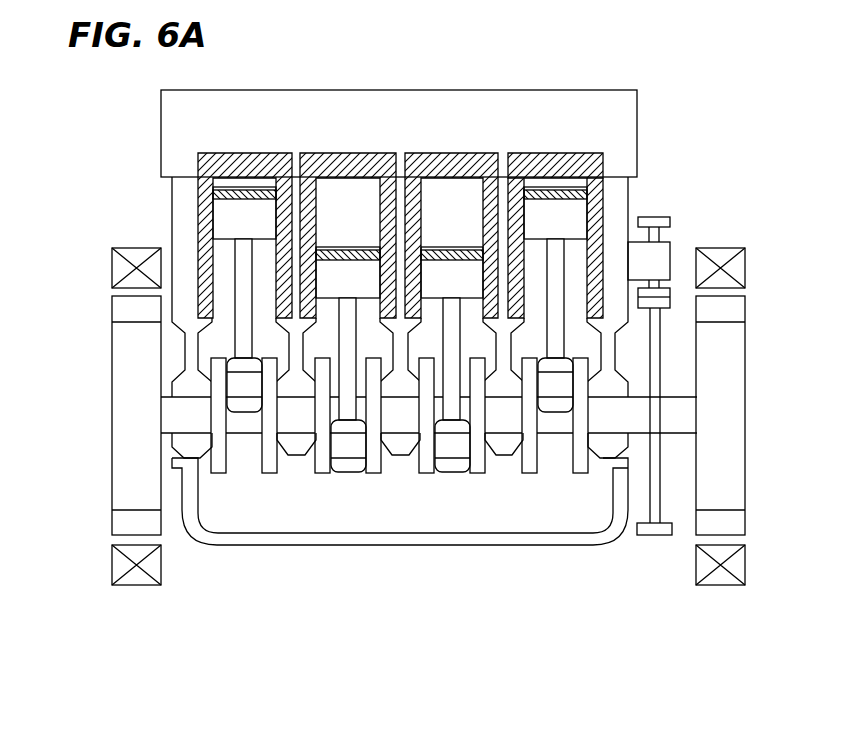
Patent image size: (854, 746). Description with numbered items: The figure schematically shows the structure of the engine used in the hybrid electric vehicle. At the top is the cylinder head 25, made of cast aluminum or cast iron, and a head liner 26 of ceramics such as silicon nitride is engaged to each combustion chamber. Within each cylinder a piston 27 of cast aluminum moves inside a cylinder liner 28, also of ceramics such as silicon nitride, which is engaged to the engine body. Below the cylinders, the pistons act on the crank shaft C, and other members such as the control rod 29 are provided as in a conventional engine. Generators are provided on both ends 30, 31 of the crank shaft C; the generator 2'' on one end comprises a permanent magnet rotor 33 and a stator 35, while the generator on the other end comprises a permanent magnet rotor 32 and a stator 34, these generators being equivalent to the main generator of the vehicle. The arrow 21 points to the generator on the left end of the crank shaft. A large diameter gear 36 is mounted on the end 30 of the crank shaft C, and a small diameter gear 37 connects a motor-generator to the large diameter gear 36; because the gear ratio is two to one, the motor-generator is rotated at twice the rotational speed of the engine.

The cylinder head 25 is at (568, 120).
The head liner 26 is at (573, 152).
The piston 27 is at (603, 168).
The cylinder liner 28 is at (603, 208).
The small diameter gear 37 is at (670, 226).
The generator 2'' is at (750, 285).
The large diameter gear 36 is at (662, 335).
The permanent magnet rotor 33 is at (745, 453).
The stator 35 is at (745, 563).
The generator 21 is at (92, 391).
The permanent magnet rotor 32 is at (112, 497).
The stator 34 is at (112, 567).
The end of crank shaft 31 is at (192, 415).
The crank shaft C is at (290, 437).
The control rod 29 is at (500, 437).
The end of crank shaft 30 is at (645, 422).